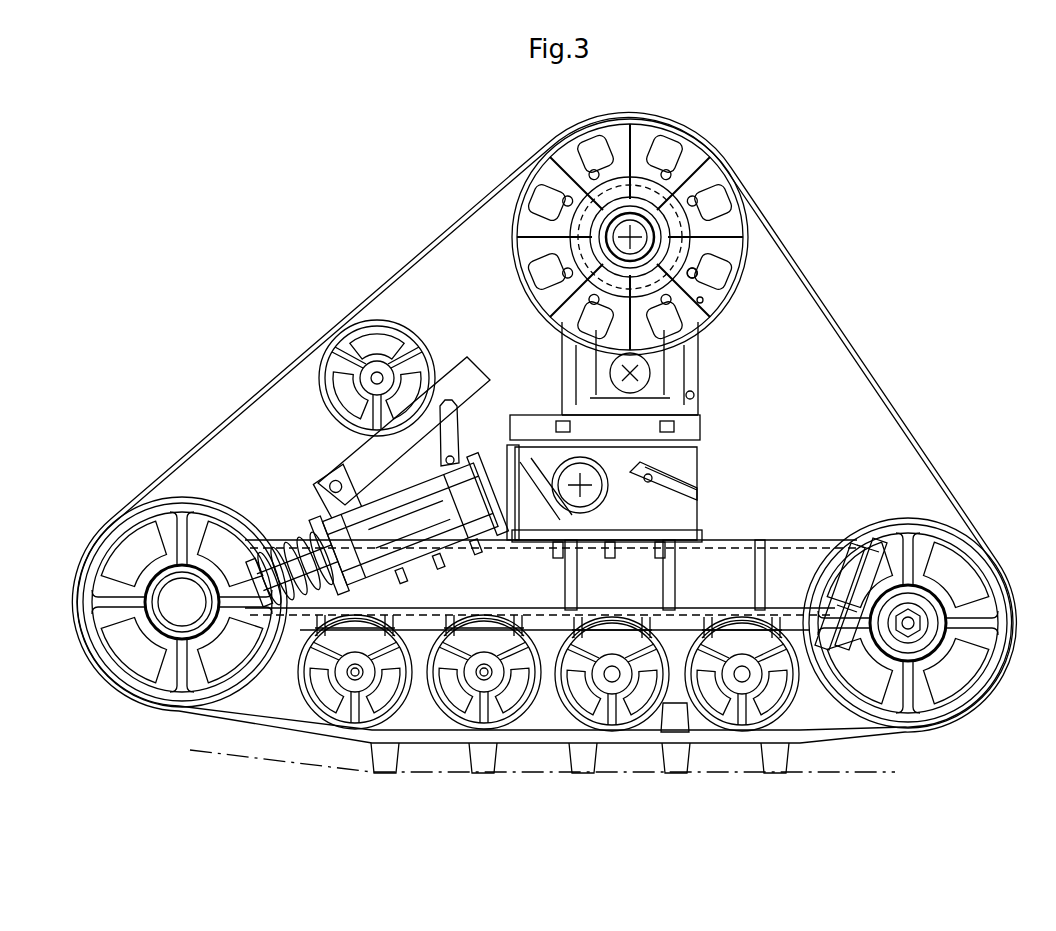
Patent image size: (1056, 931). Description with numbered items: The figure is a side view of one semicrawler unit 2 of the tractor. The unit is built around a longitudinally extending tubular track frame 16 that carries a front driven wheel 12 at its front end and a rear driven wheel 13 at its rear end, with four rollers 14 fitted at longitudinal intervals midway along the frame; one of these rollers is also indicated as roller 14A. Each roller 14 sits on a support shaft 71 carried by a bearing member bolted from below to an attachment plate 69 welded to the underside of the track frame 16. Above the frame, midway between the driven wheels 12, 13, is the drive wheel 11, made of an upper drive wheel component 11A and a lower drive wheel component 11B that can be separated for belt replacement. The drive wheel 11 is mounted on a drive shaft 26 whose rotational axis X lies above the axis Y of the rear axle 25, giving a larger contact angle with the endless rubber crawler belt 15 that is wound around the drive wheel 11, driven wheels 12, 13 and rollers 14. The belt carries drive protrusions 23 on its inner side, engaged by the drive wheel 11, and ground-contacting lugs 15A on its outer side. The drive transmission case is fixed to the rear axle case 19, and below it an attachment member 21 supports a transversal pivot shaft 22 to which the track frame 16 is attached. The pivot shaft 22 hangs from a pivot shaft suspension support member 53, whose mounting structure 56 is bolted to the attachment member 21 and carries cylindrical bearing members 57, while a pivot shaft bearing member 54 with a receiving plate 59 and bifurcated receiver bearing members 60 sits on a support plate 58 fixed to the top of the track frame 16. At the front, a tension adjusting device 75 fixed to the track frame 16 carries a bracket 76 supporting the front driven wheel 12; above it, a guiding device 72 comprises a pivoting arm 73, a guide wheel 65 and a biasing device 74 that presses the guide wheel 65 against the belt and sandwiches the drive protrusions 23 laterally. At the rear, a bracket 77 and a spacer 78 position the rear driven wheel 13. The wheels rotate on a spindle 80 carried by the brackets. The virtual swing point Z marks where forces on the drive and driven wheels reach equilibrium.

The semicrawler unit 2 is at (778, 203).
The drive wheel 11 is at (580, 231).
The drive wheel component 11A is at (581, 237).
The drive wheel component 11B is at (559, 237).
The front driven wheel 12 is at (150, 703).
The rear driven wheel 13 is at (899, 735).
The rollers 14 is at (548, 702).
The track roller 14A is at (612, 703).
The crawler belt 15 is at (396, 272).
The ground-contacting lugs 15A is at (768, 760).
The track frame 16 is at (798, 568).
The rear axle case 19 is at (568, 352).
The attachment member 21 is at (660, 428).
The pivot shaft 22 is at (576, 470).
The drive protrusions 23 is at (674, 722).
The rear axle 25 is at (652, 372).
The drive shaft 26 is at (736, 291).
The pivot shaft suspension support member 53 is at (688, 465).
The pivot shaft bearing member 54 is at (708, 520).
The mounting structure 56 is at (514, 446).
The cylindrical bearing members 57 is at (534, 474).
The support plate 58 is at (726, 545).
The receiving plate 59 is at (678, 542).
The receiver bearing members 60 is at (652, 536).
The guide wheel 65 is at (361, 340).
The attachment plate 69 is at (546, 632).
The support shaft 71 is at (482, 680).
The guiding device 72 is at (341, 340).
The pivoting arm 73 is at (375, 450).
The biasing device 74 is at (450, 432).
The tension adjusting device 75 is at (415, 500).
The bracket 76 is at (224, 612).
The bracket 77 is at (886, 600).
The spacer 78 is at (862, 600).
The spindle 80 is at (178, 598).
The rotational axis X is at (735, 328).
The axis Y is at (694, 396).
The virtual swing point Z is at (652, 479).